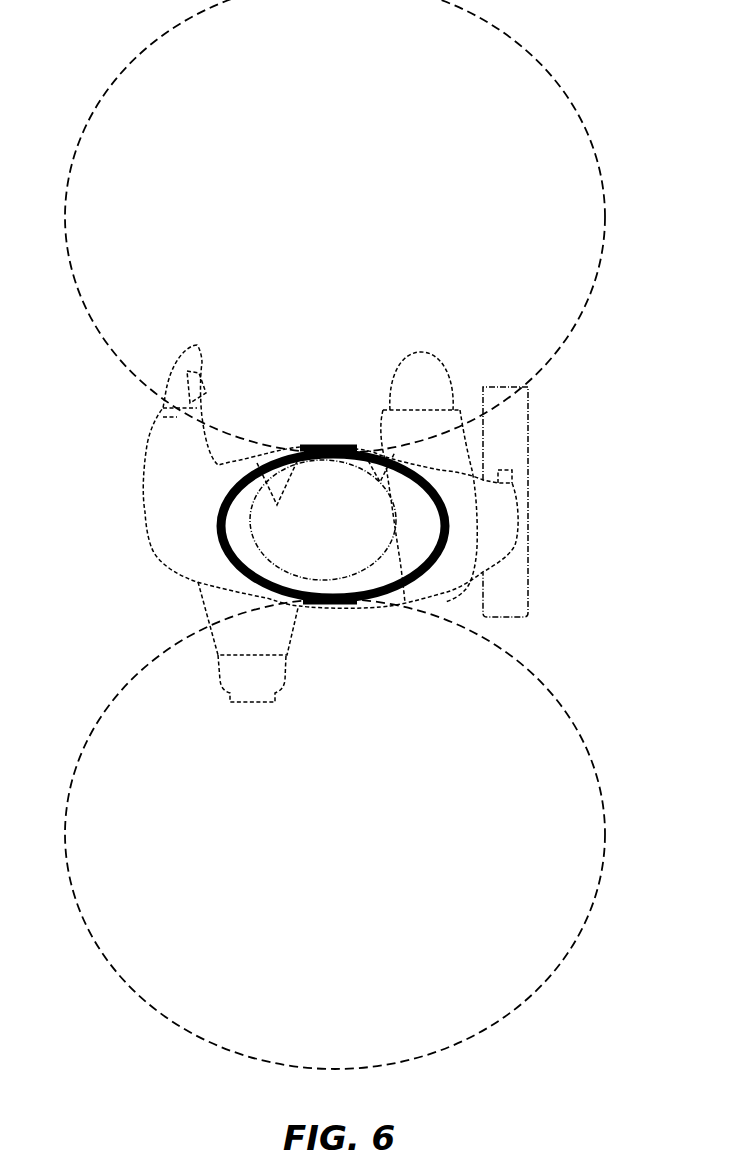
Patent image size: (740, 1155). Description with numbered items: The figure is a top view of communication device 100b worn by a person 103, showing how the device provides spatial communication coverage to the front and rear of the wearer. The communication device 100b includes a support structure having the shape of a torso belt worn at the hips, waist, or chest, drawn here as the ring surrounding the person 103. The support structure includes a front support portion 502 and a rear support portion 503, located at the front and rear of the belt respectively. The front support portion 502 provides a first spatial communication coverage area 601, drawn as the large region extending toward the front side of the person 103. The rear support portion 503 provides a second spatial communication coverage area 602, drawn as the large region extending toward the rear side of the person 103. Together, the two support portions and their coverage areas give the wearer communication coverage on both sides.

The first spatial communication coverage area 601 is at (352, 229).
The second spatial communication coverage area 602 is at (352, 844).
The person 103 is at (150, 460).
The communication device 100b is at (220, 548).
The front support portion 502 is at (343, 443).
The rear support portion 503 is at (357, 605).